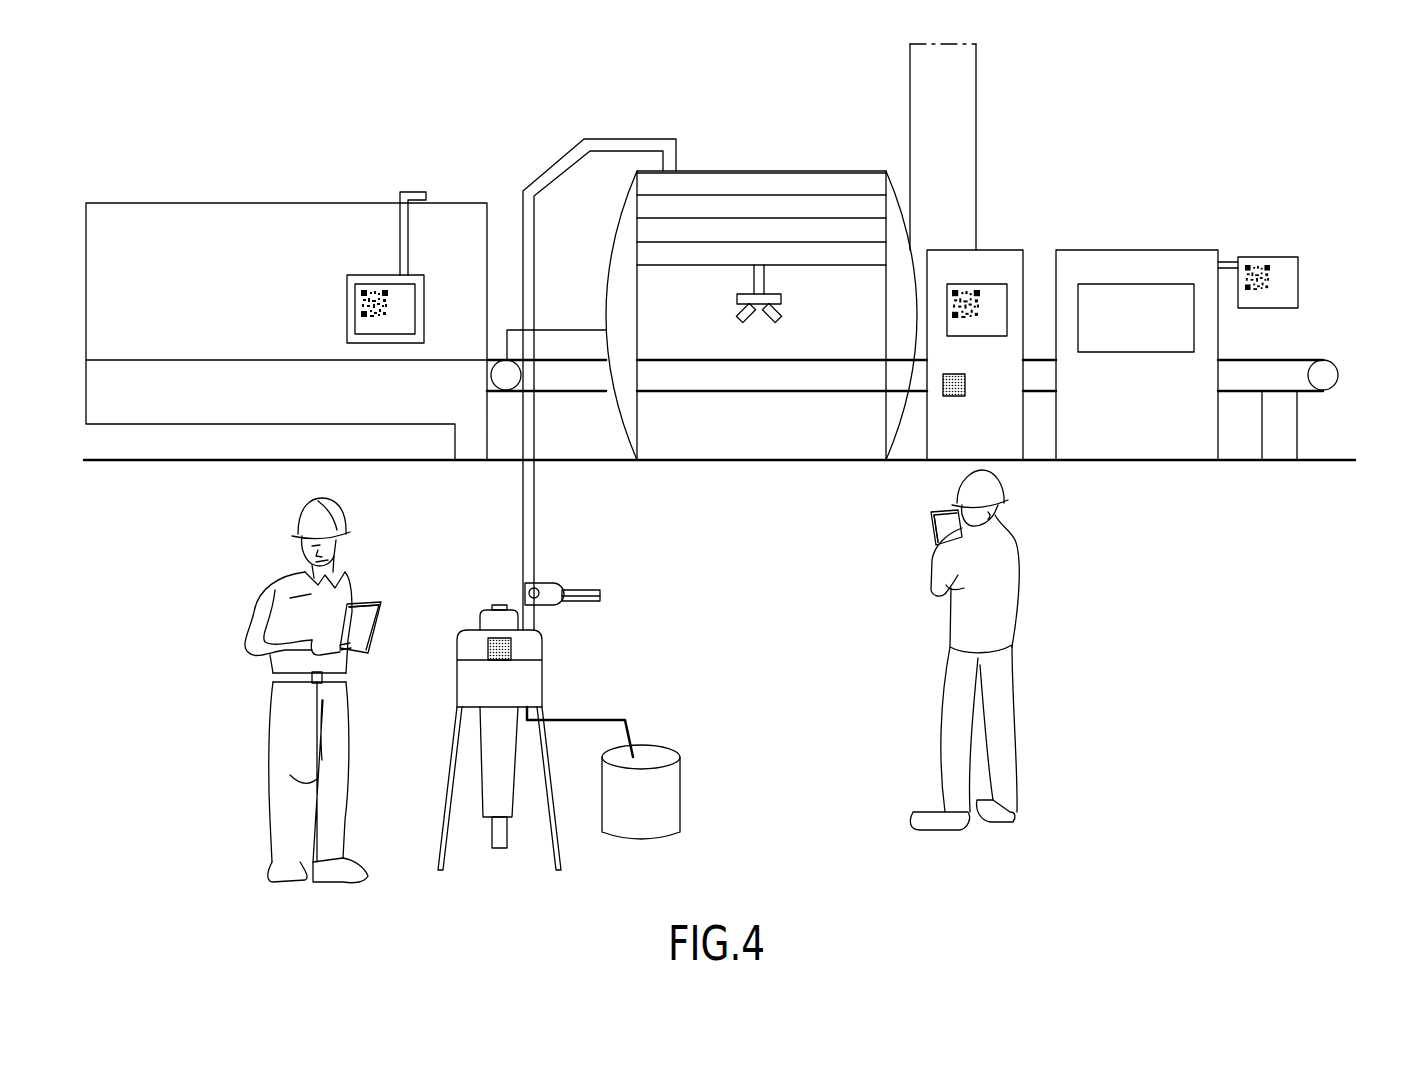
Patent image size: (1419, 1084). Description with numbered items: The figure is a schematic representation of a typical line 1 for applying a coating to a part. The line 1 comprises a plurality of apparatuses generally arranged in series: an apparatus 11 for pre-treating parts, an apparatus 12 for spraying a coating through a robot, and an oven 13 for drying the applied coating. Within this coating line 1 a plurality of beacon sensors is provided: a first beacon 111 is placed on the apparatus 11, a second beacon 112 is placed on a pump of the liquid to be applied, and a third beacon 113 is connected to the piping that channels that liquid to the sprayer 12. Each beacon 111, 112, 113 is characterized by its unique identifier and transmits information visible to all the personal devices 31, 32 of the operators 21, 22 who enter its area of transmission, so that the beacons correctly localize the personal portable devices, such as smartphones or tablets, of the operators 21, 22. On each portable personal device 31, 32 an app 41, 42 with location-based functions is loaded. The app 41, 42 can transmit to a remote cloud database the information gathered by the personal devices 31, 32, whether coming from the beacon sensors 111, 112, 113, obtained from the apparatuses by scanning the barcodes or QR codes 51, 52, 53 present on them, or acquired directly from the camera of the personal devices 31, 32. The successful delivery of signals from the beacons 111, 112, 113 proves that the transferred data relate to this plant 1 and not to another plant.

The line 1 is at (1354, 84).
The apparatus for pre-treating parts 11 is at (1097, 249).
The apparatus for spraying a coating 12 is at (810, 171).
The oven 13 is at (305, 203).
The operator 21 is at (290, 738).
The operator 22 is at (984, 609).
The personal device 31 is at (396, 598).
The personal device 32 is at (918, 544).
The app 41 is at (361, 586).
The app 42 is at (930, 514).
The barcode/QR code 51 is at (1258, 270).
The barcode/QR code 52 is at (963, 297).
The barcode/QR code 53 is at (376, 301).
The first beacon 111 is at (955, 396).
The second beacon 112 is at (499, 652).
The third beacon 113 is at (578, 592).